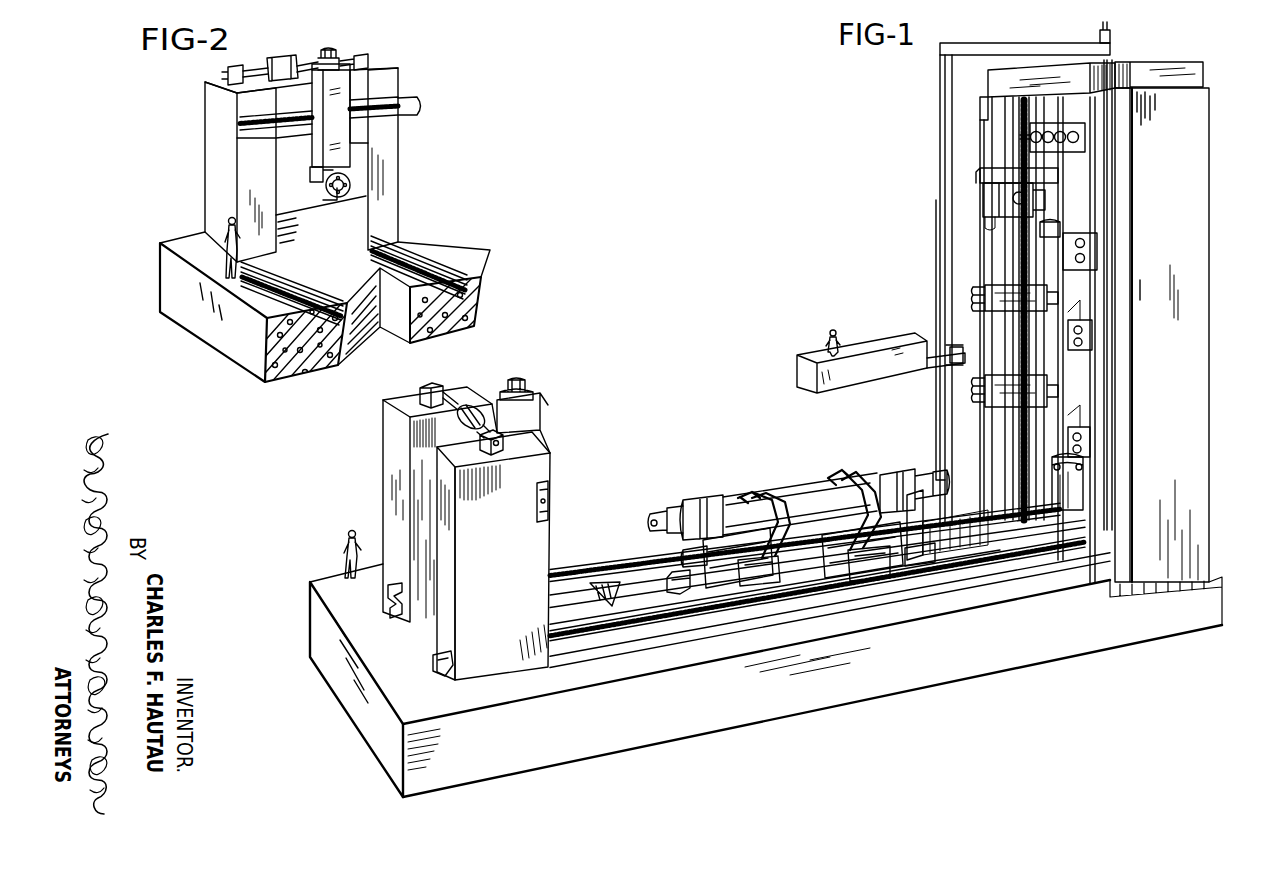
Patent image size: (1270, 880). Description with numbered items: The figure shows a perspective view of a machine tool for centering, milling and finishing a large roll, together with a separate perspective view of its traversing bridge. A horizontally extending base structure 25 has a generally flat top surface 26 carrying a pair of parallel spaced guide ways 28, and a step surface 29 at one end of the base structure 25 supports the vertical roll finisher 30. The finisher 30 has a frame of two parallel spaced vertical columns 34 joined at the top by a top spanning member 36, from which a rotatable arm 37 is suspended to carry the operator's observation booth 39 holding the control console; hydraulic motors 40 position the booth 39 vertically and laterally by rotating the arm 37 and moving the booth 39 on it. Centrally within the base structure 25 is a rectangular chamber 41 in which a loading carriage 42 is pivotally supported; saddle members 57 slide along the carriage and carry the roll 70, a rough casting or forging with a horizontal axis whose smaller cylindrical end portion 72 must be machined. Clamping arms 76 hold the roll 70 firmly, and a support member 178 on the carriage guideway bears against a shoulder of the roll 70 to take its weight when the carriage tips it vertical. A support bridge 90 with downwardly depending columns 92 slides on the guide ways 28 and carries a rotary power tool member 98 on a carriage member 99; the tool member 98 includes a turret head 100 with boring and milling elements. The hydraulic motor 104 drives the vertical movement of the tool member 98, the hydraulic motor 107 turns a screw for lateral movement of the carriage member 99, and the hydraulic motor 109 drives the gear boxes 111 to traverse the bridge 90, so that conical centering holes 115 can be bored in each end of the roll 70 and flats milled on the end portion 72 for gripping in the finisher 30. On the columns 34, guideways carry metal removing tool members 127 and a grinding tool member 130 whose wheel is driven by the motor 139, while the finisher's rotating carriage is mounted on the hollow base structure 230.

In FIG. 2, the base structure 25 is at (163, 280).
In FIG. 1, the base structure 25 is at (352, 720).
In FIG. 1, the top surface 26 is at (500, 692).
In FIG. 2, the guide ways 28 is at (268, 288).
In FIG. 1, the guide ways 28 is at (388, 595).
In FIG. 1, the step surface 29 is at (1204, 593).
In FIG. 1, the vertical roll finisher 30 is at (1091, 297).
In FIG. 1, the vertical columns 34 is at (1200, 195).
In FIG. 1, the top spanning member 36 is at (1187, 62).
In FIG. 1, the rotatable arm 37 is at (1000, 47).
In FIG. 1, the observation booth 39 is at (800, 373).
In FIG. 1, the hydraulic motors 40 is at (952, 347).
In FIG. 2, the rectangular chamber 41 is at (362, 337).
In FIG. 1, the rectangular chamber 41 is at (600, 594).
In FIG. 1, the loading carriage 42 is at (670, 592).
In FIG. 1, the saddle members 57 is at (760, 585).
In FIG. 1, the roll 70 is at (777, 489).
In FIG. 1, the end portion 72 is at (672, 510).
In FIG. 1, the clamping arms 76 is at (740, 495).
In FIG. 2, the support bridge 90 is at (204, 98).
In FIG. 1, the support bridge 90 is at (386, 422).
In FIG. 2, the columns 92 is at (243, 177).
In FIG. 2, the rotary power tool member 98 is at (338, 127).
In FIG. 1, the rotary power tool member 98 is at (533, 420).
In FIG. 2, the carriage member 99 is at (310, 139).
In FIG. 2, the turret head 100 is at (322, 191).
In FIG. 2, the hydraulic motor 104 is at (328, 50).
In FIG. 1, the hydraulic motor 104 is at (517, 378).
In FIG. 2, the hydraulic motor 107 is at (415, 97).
In FIG. 2, the hydraulic motor 109 is at (283, 58).
In FIG. 1, the hydraulic motor 109 is at (470, 407).
In FIG. 2, the gear boxes 111 is at (362, 55).
In FIG. 1, the gear boxes 111 is at (428, 383).
In FIG. 1, the centering holes 115 is at (651, 516).
In FIG. 1, the metal removing tool members 127 is at (1000, 294).
In FIG. 1, the grinding tool member 130 is at (990, 175).
In FIG. 1, the motor 139 is at (985, 205).
In FIG. 1, the support member 178 is at (930, 560).
In FIG. 1, the hollow base structure 230 is at (1080, 497).